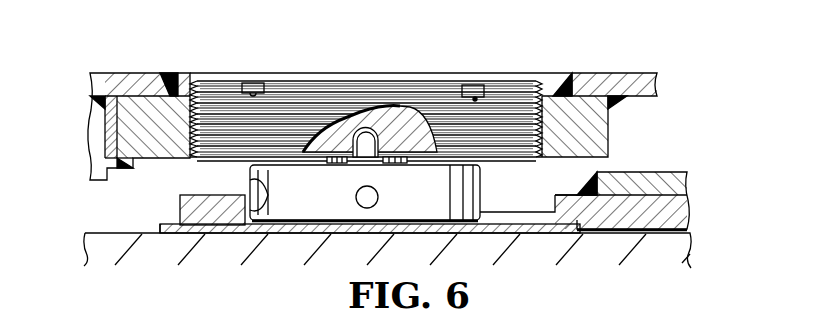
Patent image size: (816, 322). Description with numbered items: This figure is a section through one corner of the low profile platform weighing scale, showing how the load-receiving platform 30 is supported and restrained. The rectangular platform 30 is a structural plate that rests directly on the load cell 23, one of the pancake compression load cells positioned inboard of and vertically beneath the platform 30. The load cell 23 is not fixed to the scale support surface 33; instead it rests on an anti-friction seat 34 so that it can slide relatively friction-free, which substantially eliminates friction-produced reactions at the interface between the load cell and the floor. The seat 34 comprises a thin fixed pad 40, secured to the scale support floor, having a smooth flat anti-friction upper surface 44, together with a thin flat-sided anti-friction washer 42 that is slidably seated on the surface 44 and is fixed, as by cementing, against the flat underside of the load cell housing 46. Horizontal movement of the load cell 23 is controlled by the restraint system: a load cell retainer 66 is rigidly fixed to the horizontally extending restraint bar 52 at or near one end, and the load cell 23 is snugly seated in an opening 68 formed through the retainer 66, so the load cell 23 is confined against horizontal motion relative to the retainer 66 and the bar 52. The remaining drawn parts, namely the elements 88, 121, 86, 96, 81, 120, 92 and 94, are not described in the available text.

The load-receiving platform 30 is at (120, 72).
The seal ring 88 is at (176, 100).
The locking pin 121 is at (252, 82).
The load cell 23 is at (287, 157).
The threads 86 is at (358, 84).
The cam lobe 96 is at (382, 110).
The threaded nut 81 is at (450, 80).
The shoulder 120 is at (548, 92).
The flange 92 is at (556, 73).
The restraint bar 52 is at (660, 172).
The scale support surface 33 is at (110, 232).
The anti-friction seat 34 is at (167, 214).
The load cell retainer 66 is at (182, 195).
The pad 40 is at (217, 218).
The opening 68 is at (259, 193).
The load cell housing 46 is at (311, 209).
The pin opening 94 is at (361, 155).
The anti-friction upper surface 44 is at (400, 222).
The anti-friction washer 42 is at (462, 213).